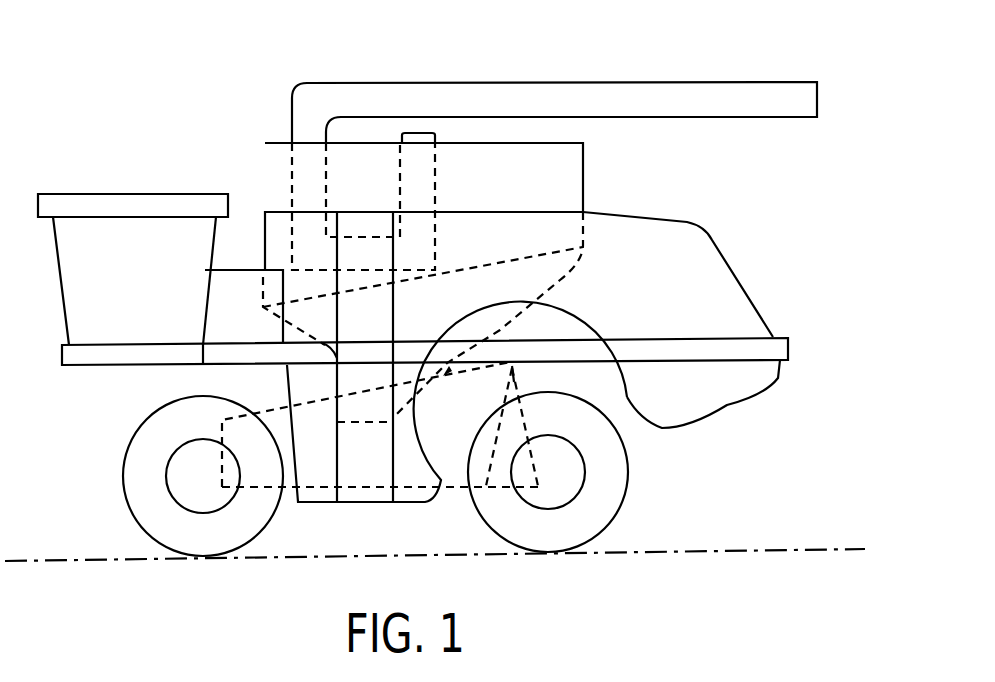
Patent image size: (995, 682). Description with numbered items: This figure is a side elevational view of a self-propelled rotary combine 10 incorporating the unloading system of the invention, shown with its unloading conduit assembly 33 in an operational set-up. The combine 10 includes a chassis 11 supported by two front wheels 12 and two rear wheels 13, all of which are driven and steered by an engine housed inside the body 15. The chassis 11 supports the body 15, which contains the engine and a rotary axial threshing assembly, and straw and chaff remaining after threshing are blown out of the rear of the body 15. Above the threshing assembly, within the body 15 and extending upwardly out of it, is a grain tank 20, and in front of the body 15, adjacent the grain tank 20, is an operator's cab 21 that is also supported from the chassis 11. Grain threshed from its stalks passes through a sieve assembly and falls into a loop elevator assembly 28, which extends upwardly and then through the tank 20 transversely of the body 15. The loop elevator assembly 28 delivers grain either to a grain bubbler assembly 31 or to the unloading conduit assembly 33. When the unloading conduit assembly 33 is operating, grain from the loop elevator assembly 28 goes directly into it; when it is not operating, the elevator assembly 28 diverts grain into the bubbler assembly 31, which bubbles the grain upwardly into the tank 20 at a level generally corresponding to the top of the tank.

The combine 10 is at (187, 82).
The chassis 11 is at (453, 500).
The front wheels 12 is at (148, 521).
The rear wheels 13 is at (610, 514).
The body 15 is at (693, 403).
The grain tank 20 is at (585, 172).
The operator's cab 21 is at (120, 227).
The loop elevator assembly 28 is at (337, 447).
The grain bubbler assembly 31 is at (442, 158).
The unloading conduit assembly 33 is at (280, 127).